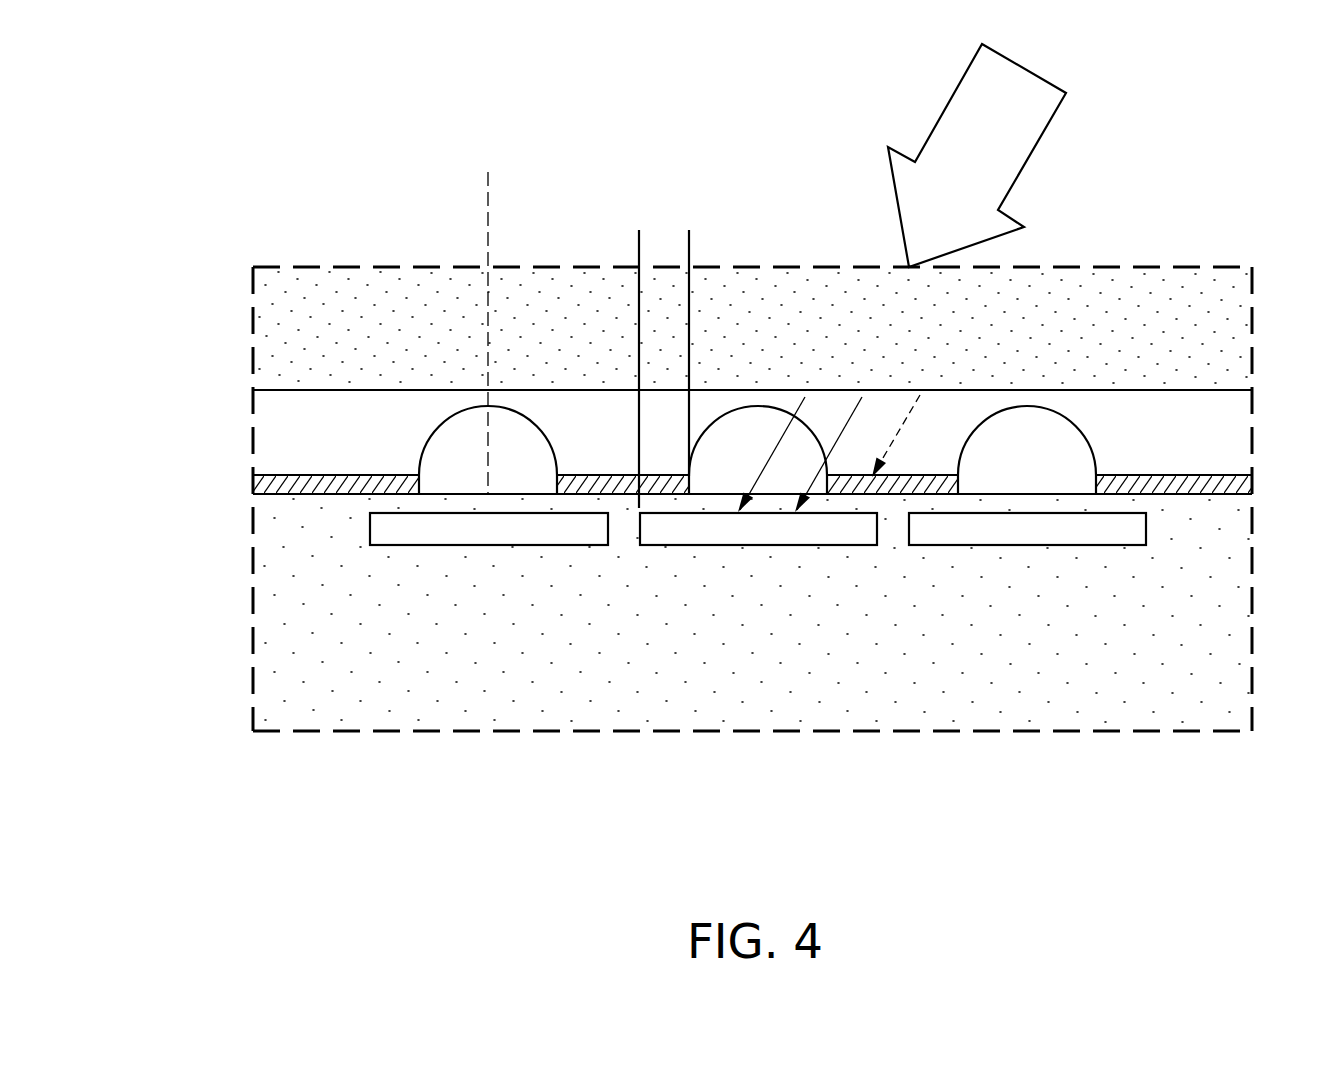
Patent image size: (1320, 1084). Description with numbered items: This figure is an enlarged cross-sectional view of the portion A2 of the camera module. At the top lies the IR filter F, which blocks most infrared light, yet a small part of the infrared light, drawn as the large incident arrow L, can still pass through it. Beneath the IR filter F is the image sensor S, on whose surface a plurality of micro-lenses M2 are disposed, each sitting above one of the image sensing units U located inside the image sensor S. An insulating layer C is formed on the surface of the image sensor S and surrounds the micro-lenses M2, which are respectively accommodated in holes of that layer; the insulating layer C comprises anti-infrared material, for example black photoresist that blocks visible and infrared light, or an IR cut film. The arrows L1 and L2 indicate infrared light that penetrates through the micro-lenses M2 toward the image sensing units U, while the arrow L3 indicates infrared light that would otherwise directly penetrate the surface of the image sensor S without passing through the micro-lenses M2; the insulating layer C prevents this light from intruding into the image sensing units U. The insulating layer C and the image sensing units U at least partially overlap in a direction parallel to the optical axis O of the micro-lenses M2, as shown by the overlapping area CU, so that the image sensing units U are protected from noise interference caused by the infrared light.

The portion A2 is at (189, 124).
The IR filter F is at (266, 334).
The insulating layer C is at (278, 477).
The image sensor S is at (268, 605).
The micro-lenses M2 is at (512, 478).
The image sensing units U is at (577, 532).
The optical axis O is at (488, 316).
The overlapping area CU is at (641, 237).
The infrared light L is at (948, 100).
The arrow L1 is at (787, 428).
The arrow L2 is at (842, 427).
The arrow L3 is at (903, 425).